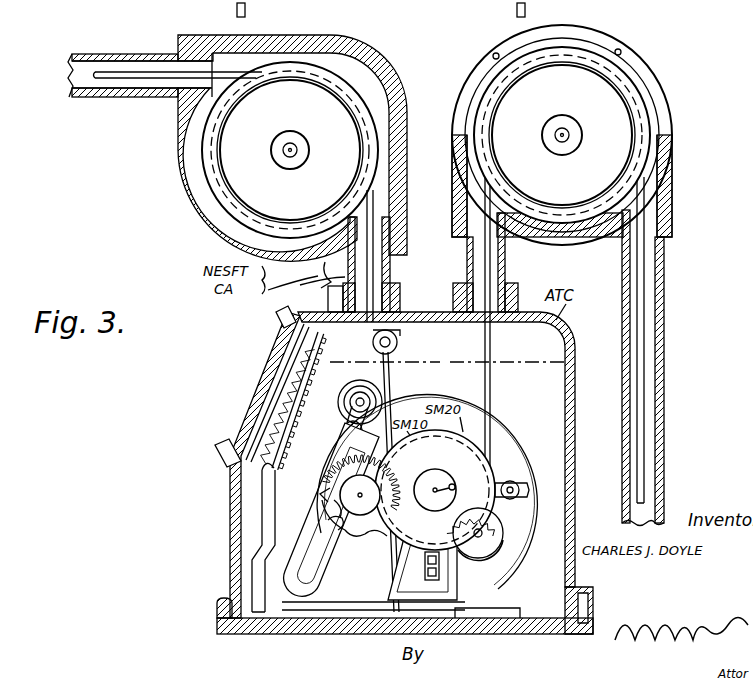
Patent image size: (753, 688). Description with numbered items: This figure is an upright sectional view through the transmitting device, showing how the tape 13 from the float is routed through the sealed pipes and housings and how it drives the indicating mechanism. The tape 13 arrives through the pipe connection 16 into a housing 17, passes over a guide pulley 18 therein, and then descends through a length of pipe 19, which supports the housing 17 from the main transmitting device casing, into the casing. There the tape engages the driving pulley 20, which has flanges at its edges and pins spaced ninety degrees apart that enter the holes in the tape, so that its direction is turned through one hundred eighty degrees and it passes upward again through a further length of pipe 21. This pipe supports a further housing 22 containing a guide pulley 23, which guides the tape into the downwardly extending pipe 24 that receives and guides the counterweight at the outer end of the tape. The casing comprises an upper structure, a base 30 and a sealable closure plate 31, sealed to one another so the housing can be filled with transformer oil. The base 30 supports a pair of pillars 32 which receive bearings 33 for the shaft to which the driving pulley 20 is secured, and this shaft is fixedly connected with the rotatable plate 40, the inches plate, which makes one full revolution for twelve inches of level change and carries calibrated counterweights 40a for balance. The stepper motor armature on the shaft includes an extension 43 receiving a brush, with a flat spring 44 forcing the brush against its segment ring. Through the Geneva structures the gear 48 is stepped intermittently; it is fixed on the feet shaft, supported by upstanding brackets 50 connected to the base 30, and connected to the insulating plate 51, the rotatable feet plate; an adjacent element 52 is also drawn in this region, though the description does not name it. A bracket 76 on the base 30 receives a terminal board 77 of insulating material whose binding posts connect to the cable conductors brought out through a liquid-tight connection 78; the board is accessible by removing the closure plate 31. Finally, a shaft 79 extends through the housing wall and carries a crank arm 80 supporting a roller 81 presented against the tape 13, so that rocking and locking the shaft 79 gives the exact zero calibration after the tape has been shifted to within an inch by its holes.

The tape 13 is at (148, 78).
The pipe connection 16 is at (106, 56).
The housing 17 is at (318, 46).
The guide pulley 18 is at (290, 150).
The length of pipe 19 is at (392, 276).
The driving pulley 20 is at (435, 490).
The length of pipe 21 is at (506, 271).
The housing 22 is at (462, 112).
The guide pulley 23 is at (562, 135).
The pipe 24 is at (662, 278).
The base 30 is at (217, 632).
The closure plate 31 is at (268, 392).
The pillars 32 is at (458, 590).
The bearings 33 is at (459, 477).
The rotatable plate 40 is at (501, 446).
The counterweights 40a is at (480, 556).
The extension 43 is at (458, 572).
The flat spring 44 is at (520, 480).
The gear 48 is at (328, 503).
The brackets 50 is at (296, 580).
The insulating plate 51 is at (330, 520).
The disc 52 is at (500, 541).
The bracket 76 is at (272, 528).
The terminal board 77 is at (268, 468).
The liquid-tight connection 78 is at (328, 297).
The shaft 79 is at (328, 490).
The crank arm 80 is at (382, 398).
The roller 81 is at (397, 357).